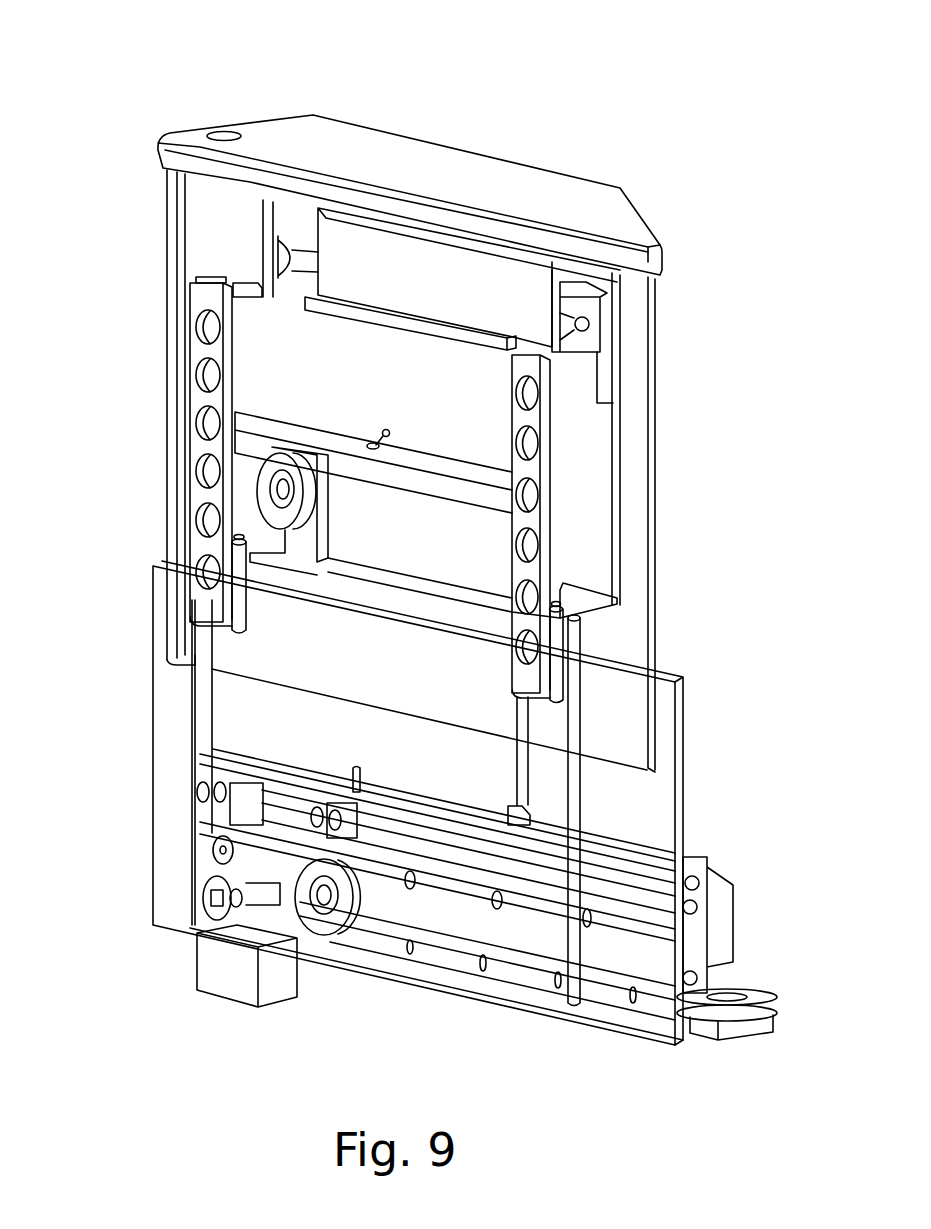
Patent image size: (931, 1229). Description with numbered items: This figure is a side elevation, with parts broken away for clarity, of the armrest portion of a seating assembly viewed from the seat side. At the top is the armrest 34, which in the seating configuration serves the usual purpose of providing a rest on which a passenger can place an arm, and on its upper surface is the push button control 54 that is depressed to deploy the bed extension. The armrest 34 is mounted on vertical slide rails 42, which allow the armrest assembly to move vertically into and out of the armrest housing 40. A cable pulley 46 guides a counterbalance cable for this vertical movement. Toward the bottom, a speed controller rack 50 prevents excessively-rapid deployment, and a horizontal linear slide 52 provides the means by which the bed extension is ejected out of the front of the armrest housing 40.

The armrest 34 is at (587, 195).
The push button control 54 is at (218, 132).
The armrest housing 40 is at (170, 458).
The vertical slide rail 42 is at (207, 350).
The cable pulley 46 is at (298, 896).
The speed controller rack 50 is at (613, 963).
The horizontal linear slide 52 is at (630, 922).